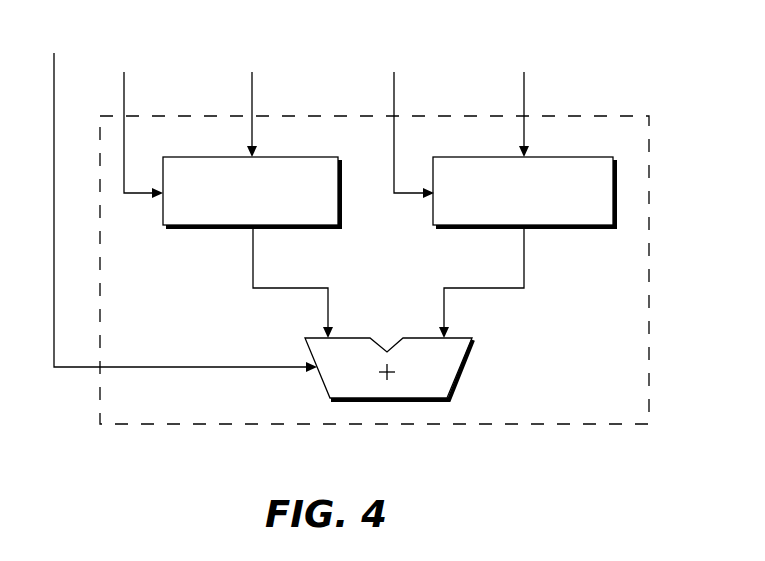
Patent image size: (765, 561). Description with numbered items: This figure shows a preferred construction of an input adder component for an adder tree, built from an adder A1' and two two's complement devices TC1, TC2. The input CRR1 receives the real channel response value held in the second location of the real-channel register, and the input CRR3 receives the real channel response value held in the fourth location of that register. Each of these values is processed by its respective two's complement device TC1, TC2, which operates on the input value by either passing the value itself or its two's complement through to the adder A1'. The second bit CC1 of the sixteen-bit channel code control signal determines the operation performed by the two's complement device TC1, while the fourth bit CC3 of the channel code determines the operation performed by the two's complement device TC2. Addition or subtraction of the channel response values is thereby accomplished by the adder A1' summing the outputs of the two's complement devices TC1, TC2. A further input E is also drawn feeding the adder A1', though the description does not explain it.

The enable/carry input signal E is at (181, 196).
The second bit of the channel code control signal CC1 is at (131, 119).
The input CRR1 is at (251, 99).
The fourth bit of the channel code control signal CC3 is at (403, 119).
The input CRR3 is at (520, 99).
The two's complement device TC1 is at (208, 228).
The two's complement device TC2 is at (560, 227).
The adder A1' is at (434, 369).